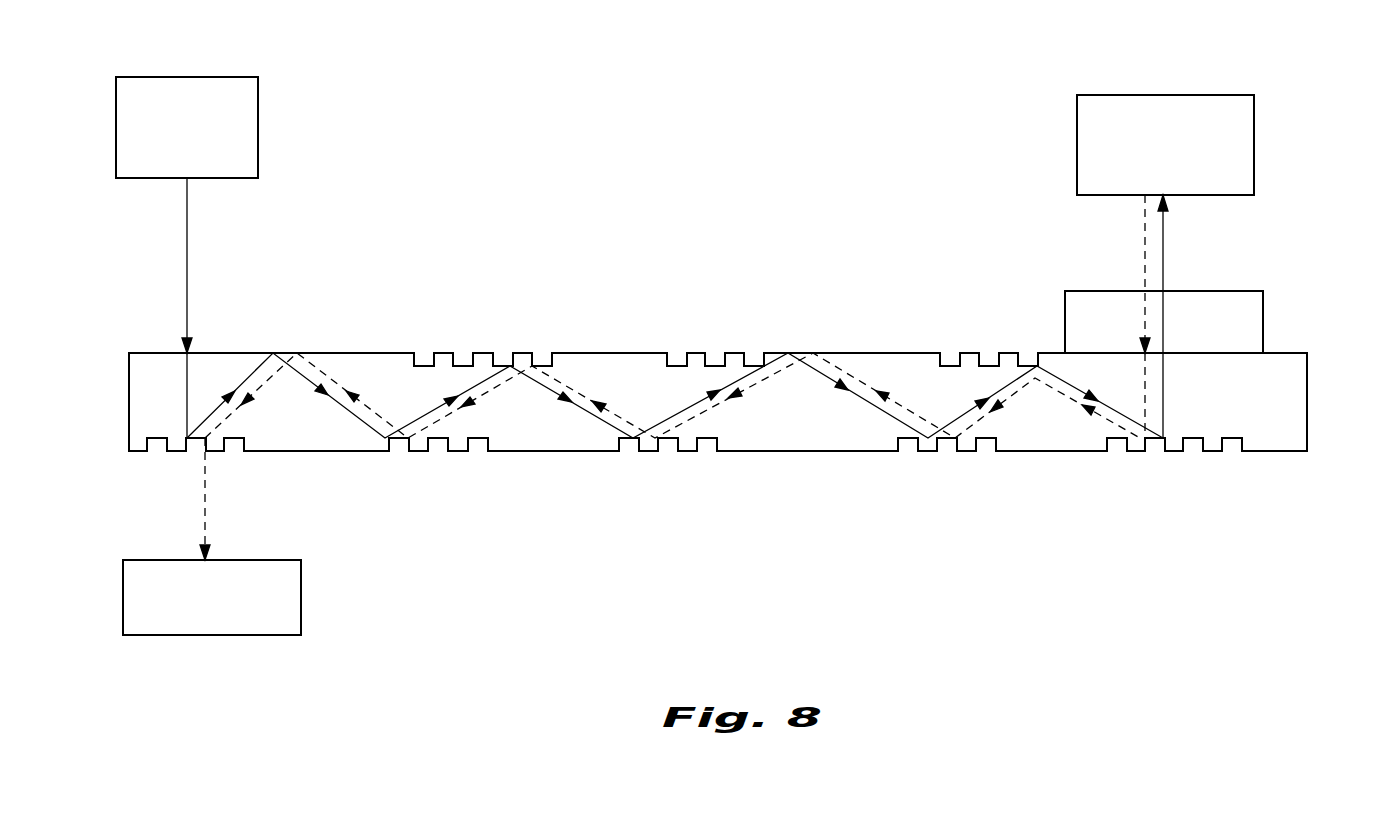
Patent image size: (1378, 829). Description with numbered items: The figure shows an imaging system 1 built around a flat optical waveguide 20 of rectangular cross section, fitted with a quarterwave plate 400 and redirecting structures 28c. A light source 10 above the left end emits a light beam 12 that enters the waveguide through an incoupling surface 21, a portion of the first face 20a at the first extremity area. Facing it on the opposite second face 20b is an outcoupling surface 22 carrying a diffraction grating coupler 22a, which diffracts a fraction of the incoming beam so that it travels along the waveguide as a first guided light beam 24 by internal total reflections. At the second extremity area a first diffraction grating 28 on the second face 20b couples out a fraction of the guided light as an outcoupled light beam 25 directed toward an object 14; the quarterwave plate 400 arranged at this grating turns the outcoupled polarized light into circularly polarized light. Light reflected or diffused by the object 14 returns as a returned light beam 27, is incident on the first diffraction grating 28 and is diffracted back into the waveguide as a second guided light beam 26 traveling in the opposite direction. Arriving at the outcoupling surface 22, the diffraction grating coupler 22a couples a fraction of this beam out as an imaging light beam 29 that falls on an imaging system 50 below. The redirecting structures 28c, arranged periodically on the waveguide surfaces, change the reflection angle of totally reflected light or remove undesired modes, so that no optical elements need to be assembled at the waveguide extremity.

The imaging system 1 is at (770, 175).
The light source 10 is at (235, 128).
The light beam 12 is at (187, 253).
The object 14 is at (1238, 155).
The optical waveguide 20 is at (1275, 440).
The first face 20a is at (853, 352).
The second face 20b is at (793, 452).
The incoupling surface 21 is at (207, 342).
The outcoupling surface 22 is at (229, 460).
The diffraction grating coupler 22a is at (167, 450).
The first guided light beam 24 is at (435, 405).
The outcoupled light beam 25 is at (1165, 263).
The second guided light beam 26 is at (748, 392).
The returned light beam 27 is at (1143, 228).
The first diffraction grating 28 is at (1212, 452).
The redirecting structures 28c is at (516, 352).
The imaging light beam 29 is at (208, 498).
The imaging system 50 is at (283, 597).
The quarterwave plate 400 is at (1230, 318).